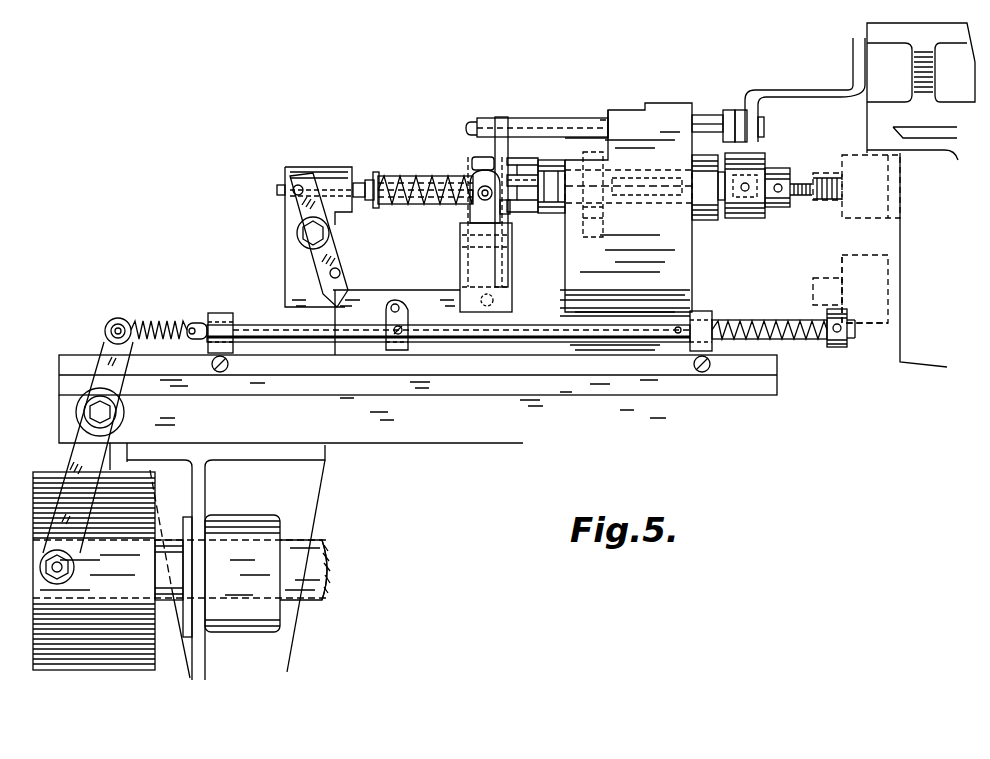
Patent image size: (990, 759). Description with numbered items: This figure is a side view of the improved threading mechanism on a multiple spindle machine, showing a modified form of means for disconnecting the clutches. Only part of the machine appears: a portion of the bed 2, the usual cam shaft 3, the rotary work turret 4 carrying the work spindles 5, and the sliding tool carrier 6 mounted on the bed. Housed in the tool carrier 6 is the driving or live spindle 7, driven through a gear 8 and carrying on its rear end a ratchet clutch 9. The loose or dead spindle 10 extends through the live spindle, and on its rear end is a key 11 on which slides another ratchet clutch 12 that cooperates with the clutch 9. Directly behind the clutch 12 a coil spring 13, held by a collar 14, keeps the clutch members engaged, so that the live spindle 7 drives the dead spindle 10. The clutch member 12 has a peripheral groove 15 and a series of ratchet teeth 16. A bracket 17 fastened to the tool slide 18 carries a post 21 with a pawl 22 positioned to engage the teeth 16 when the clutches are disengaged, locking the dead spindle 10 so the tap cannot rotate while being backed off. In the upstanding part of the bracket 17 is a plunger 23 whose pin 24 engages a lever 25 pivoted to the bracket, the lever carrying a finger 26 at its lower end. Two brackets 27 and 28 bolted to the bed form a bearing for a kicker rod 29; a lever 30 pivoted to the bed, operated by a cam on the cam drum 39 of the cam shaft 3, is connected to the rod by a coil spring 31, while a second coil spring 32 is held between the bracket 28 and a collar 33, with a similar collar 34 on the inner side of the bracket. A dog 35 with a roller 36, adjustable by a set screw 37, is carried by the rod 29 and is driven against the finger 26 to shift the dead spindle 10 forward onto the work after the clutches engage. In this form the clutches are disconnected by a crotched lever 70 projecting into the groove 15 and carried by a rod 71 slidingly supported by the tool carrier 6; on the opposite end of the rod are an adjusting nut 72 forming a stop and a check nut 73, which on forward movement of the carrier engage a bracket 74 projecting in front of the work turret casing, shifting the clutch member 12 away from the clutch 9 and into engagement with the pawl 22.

The bed 2 is at (418, 399).
The cam shaft 3 is at (325, 555).
The rotary work turret 4 is at (921, 195).
The work spindle 5 is at (870, 207).
The sliding tool carrier 6 is at (628, 207).
The driving spindle 7 is at (707, 220).
The gear 8 is at (593, 207).
The ratchet clutch 9 is at (549, 166).
The loose spindle 10 is at (747, 220).
The key 11 is at (425, 175).
The ratchet clutch 12 is at (522, 158).
The coil spring 13 is at (410, 168).
The collar 14 is at (379, 175).
The groove 15 is at (502, 206).
The ratchet teeth 16 is at (481, 160).
The bracket 17 is at (325, 168).
The tool slide 18 is at (476, 348).
The post 21 is at (422, 256).
The pawl 22 is at (470, 196).
The plunger 23 is at (359, 183).
The pin 24 is at (293, 192).
The lever 25 is at (300, 215).
The finger 26 is at (341, 273).
The bracket 27 is at (229, 305).
The bracket 28 is at (705, 313).
The kicker rod 29 is at (557, 330).
The lever 30 is at (76, 449).
The coil spring 31 is at (172, 313).
The coil spring 32 is at (748, 322).
The collar 33 is at (837, 347).
The collar 34 is at (690, 348).
The dog 35 is at (398, 345).
The roller 36 is at (390, 312).
The set screw 37 is at (406, 340).
The cam drum 39 is at (40, 530).
The crotched lever 70 is at (500, 117).
The rod 71 is at (558, 122).
The adjusting nut 72 is at (741, 110).
The check nut 73 is at (728, 110).
The bracket 74 is at (795, 90).